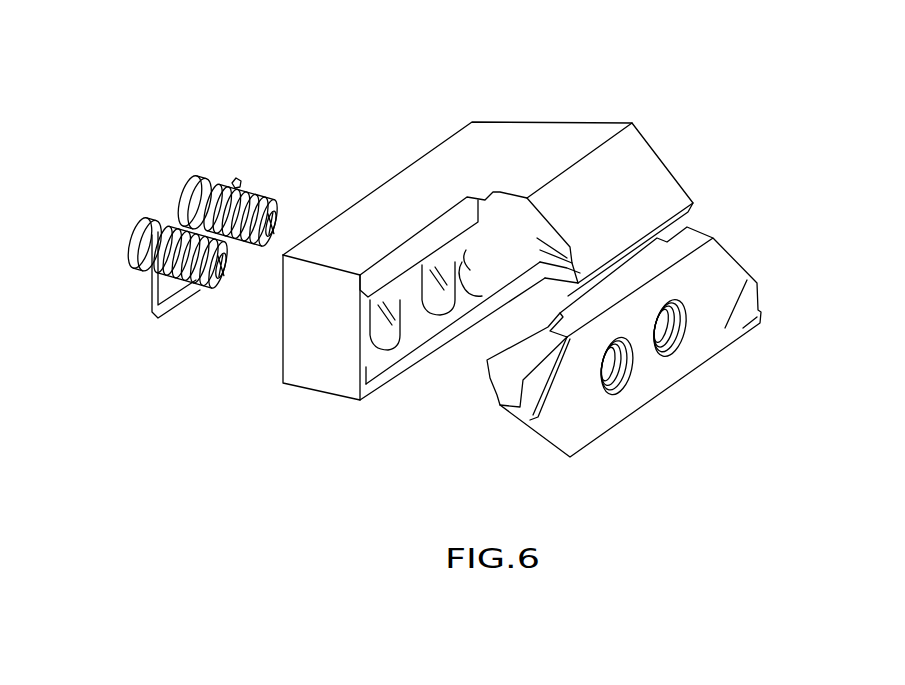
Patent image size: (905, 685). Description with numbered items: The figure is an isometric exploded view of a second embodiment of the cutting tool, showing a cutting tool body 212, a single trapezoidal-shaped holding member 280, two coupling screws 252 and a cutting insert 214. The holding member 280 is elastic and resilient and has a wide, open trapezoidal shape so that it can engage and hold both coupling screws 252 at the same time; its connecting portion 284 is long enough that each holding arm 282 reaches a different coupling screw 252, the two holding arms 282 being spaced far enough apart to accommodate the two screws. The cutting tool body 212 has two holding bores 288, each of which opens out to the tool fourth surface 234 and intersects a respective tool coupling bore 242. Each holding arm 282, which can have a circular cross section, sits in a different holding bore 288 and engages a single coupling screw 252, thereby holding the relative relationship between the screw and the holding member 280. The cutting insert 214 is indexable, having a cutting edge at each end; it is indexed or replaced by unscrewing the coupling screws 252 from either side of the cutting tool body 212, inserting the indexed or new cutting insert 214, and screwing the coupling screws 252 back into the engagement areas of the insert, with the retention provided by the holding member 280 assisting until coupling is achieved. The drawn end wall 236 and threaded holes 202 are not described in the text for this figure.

The cutting tool body 212 is at (446, 113).
The end wall of housing 236 is at (283, 356).
The tool fourth surface 234 is at (318, 386).
The tool coupling bore 242 is at (385, 320).
The holding bore 288 is at (433, 265).
The cutting insert 214 is at (707, 363).
The threaded holes 202 is at (577, 410).
The coupling screw 252 is at (183, 172).
The holding arm 282 is at (240, 181).
The connecting portion 284 is at (190, 297).
The holding member 280 is at (140, 331).